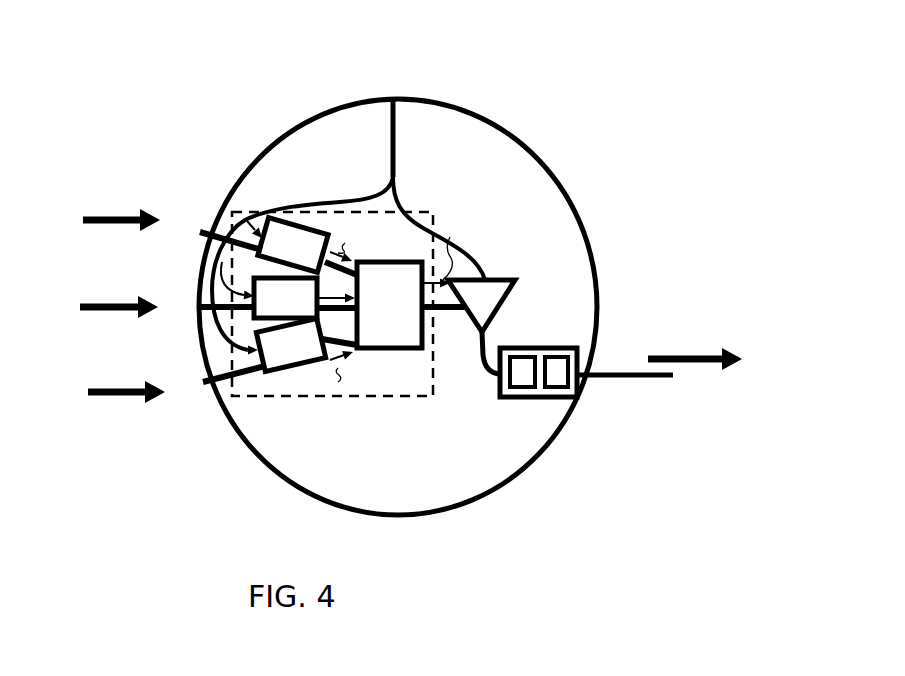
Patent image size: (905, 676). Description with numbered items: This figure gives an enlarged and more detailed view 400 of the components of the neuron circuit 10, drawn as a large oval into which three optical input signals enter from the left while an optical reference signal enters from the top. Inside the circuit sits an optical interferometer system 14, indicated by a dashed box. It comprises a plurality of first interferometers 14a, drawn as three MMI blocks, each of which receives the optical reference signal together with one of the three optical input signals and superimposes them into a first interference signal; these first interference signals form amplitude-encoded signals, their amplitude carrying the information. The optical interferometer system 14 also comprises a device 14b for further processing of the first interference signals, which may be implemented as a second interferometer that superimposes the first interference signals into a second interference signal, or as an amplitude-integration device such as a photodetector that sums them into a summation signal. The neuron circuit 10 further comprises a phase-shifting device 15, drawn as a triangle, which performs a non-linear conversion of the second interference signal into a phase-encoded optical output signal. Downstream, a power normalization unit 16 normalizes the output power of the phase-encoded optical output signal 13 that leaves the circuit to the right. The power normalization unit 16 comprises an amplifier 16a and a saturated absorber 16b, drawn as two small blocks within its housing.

The enlarged and more detailed view 400 is at (422, 336).
The neuron circuit 10 is at (505, 152).
The phase-encoded optical output signal 13 is at (660, 378).
The optical interferometer system 14 is at (340, 397).
The first interferometers 14a is at (300, 200).
The device for further processing of the first interference signals 14b is at (380, 349).
The phase-shifting device 15 is at (500, 278).
The power normalization unit 16 is at (544, 366).
The amplifier 16a is at (490, 398).
The saturated absorber 16b is at (570, 398).